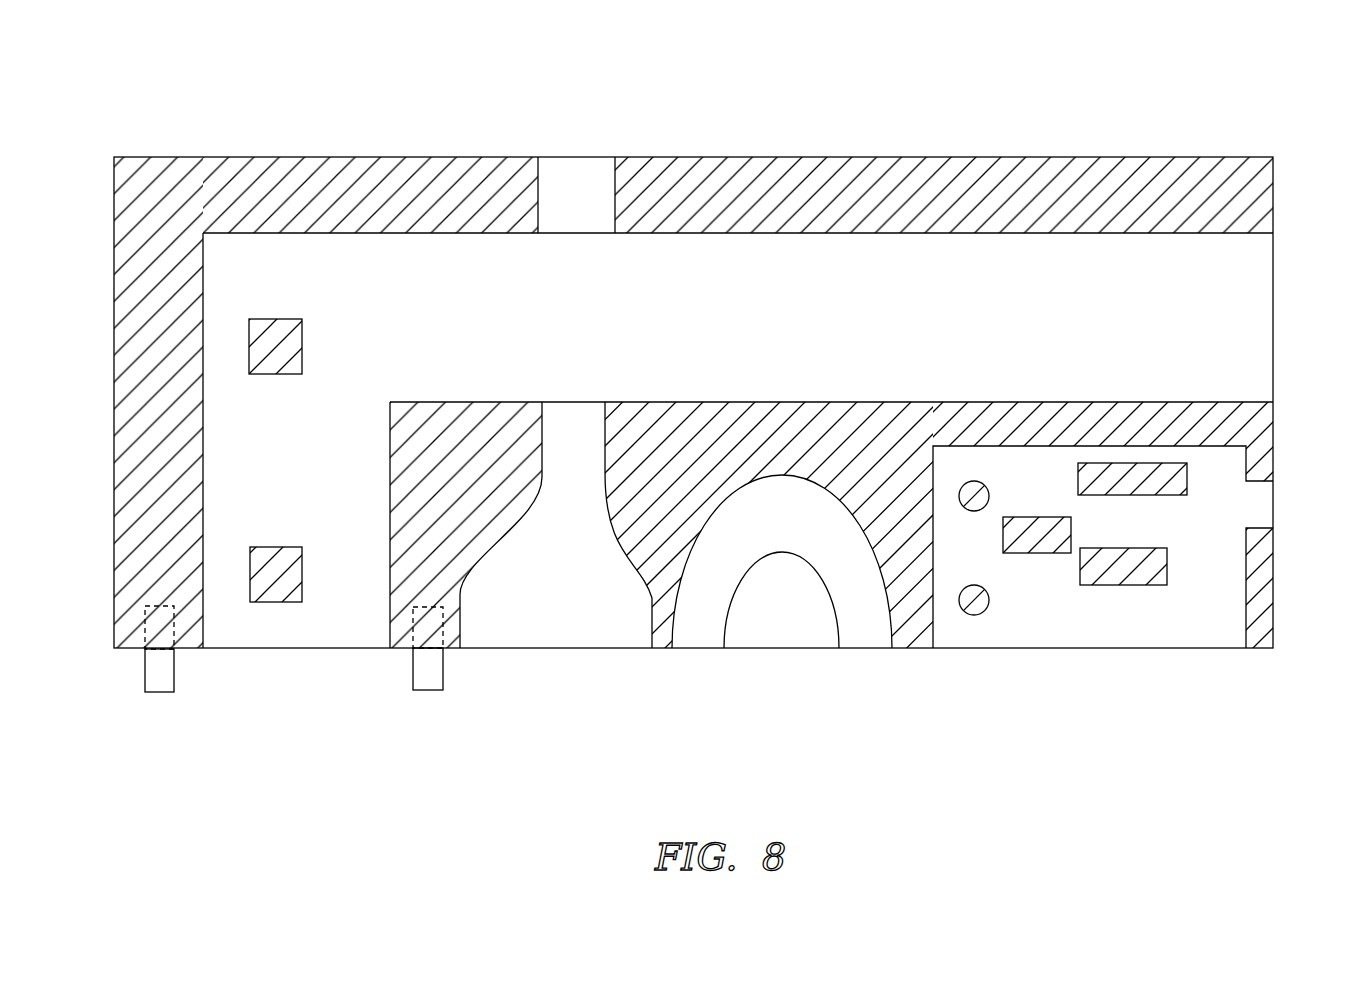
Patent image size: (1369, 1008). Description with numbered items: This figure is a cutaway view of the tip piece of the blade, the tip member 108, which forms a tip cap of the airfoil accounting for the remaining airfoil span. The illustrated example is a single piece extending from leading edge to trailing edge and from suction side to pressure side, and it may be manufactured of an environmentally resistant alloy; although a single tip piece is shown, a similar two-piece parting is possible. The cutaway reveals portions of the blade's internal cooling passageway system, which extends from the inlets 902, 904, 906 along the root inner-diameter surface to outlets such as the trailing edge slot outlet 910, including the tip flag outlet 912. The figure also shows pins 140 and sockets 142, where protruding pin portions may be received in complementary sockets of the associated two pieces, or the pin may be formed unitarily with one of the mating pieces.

The tip member 108 is at (996, 128).
The tip flag outlet 912 is at (1283, 327).
The trailing edge slot outlet 910 is at (1283, 500).
The inlet 902 is at (313, 683).
The inlet 904 is at (859, 670).
The inlet 906 is at (1023, 668).
The pin 140 is at (135, 694).
The socket 142 is at (172, 637).